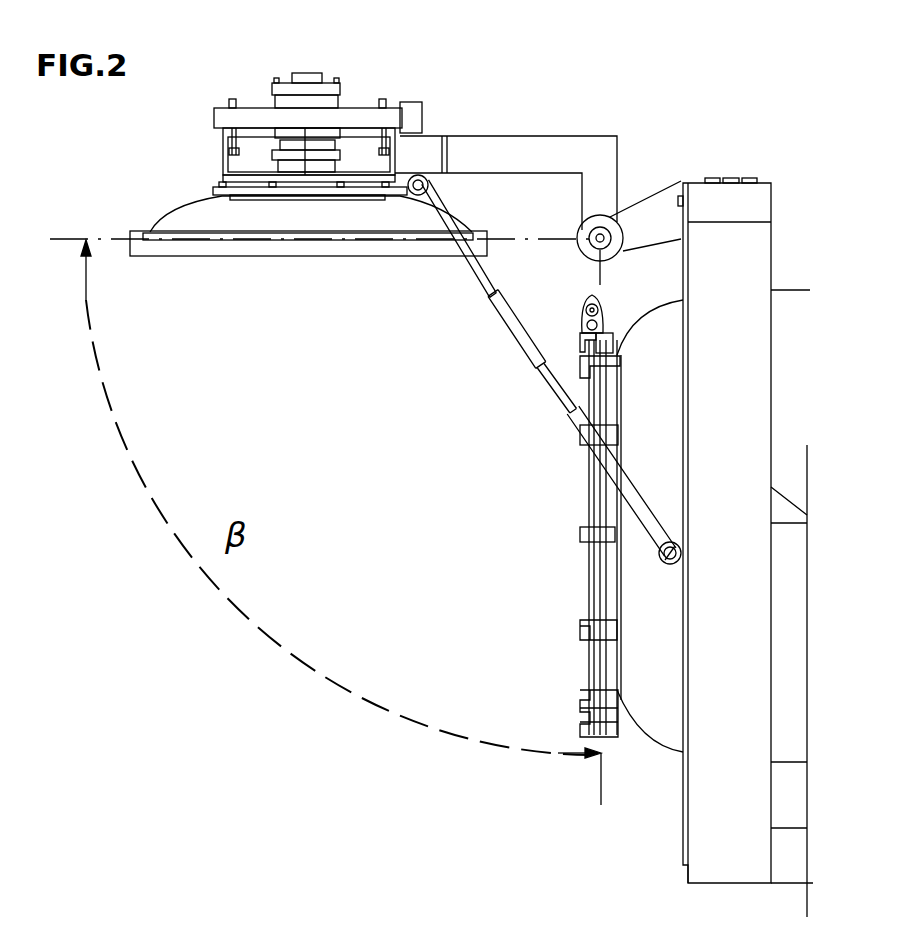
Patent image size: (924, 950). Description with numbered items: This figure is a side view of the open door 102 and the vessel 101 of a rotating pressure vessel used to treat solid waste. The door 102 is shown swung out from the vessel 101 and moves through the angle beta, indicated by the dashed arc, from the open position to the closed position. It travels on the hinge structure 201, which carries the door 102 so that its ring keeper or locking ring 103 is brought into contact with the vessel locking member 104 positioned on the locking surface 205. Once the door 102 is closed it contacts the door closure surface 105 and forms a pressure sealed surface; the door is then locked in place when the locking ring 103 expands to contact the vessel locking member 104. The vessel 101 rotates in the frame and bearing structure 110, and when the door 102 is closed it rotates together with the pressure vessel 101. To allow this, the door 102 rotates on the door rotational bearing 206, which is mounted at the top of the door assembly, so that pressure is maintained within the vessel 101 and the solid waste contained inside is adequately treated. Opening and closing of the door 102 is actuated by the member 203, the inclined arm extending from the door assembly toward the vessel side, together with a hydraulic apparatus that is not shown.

The vessel 101 is at (824, 603).
The door 102 is at (163, 250).
The locking ring 103 is at (148, 242).
The vessel locking member 104 is at (580, 531).
The door closure surface 105 is at (581, 595).
The frame and bearing structure 110 is at (724, 530).
The hinge structure 201 is at (640, 212).
The member 203 is at (508, 335).
The locking surface 205 is at (660, 323).
The door rotational bearing 206 is at (333, 108).